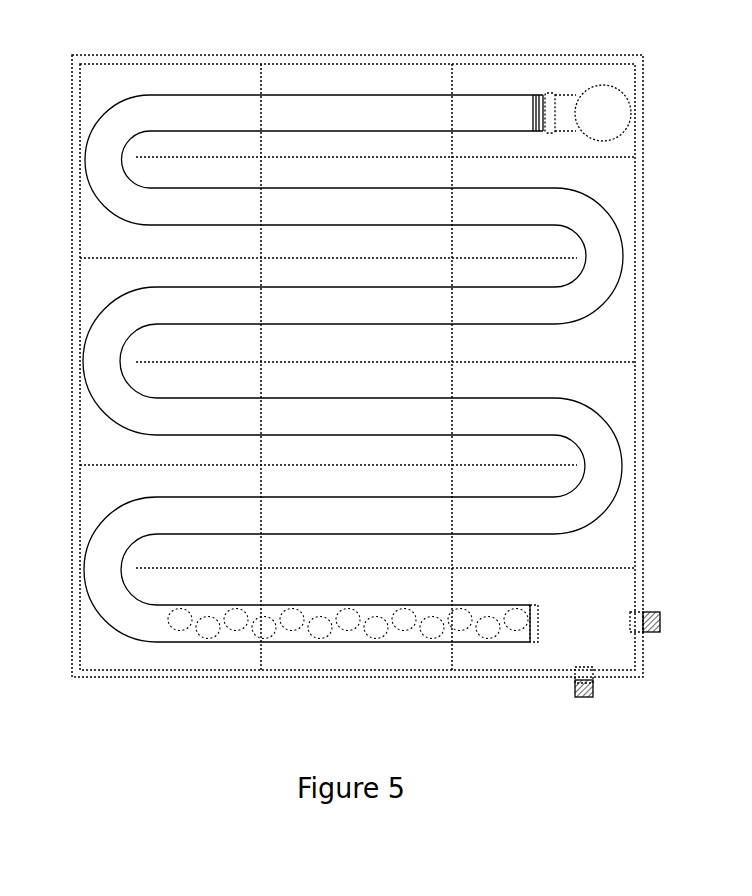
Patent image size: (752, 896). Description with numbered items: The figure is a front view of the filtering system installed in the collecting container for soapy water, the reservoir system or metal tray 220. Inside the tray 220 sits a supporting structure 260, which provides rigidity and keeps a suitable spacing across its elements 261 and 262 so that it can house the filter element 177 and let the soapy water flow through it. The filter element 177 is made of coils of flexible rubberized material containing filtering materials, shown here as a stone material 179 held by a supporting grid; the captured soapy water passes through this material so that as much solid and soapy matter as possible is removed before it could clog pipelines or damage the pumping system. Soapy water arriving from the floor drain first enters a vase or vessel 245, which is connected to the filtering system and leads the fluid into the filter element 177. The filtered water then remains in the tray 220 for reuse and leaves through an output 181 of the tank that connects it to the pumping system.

The reservoir system or metal tray 220 is at (480, 58).
The element of the supporting structure 262 is at (262, 75).
The supporting structure 260 is at (607, 360).
The element of the supporting structure 261 is at (100, 455).
The filter element 177 is at (89, 131).
The vase or vessel 245 is at (614, 140).
The stone material 179 is at (375, 626).
The output of the tank 181 is at (594, 690).